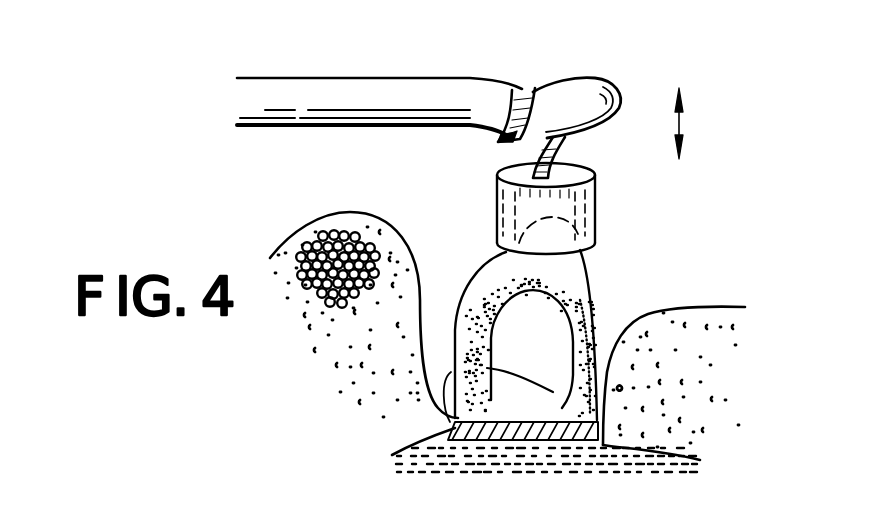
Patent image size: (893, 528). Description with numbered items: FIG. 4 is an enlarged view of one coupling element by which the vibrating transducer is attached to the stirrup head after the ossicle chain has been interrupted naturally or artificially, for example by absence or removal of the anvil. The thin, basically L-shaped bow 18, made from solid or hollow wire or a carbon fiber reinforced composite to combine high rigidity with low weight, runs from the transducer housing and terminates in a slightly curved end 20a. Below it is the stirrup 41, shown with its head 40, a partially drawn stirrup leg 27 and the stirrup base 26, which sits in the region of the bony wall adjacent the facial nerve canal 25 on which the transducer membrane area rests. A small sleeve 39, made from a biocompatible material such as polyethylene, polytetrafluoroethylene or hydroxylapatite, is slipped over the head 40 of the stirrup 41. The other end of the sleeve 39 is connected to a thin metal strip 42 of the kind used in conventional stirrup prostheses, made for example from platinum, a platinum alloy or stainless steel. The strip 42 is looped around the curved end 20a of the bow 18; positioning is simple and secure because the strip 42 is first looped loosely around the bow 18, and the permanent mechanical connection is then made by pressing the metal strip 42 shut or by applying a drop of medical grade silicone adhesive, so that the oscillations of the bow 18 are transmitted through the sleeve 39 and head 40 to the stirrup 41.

The bow 18 is at (326, 80).
The slightly curved end of transducer bow 20a is at (599, 79).
The metal strip 42 is at (540, 84).
The sleeve 39 is at (597, 211).
The stirrup head 40 is at (550, 236).
The stirrup 41 is at (603, 343).
The stirrup base 26 is at (450, 412).
The stirrup leg 27 is at (462, 312).
The facial nerve canal 25 is at (300, 252).